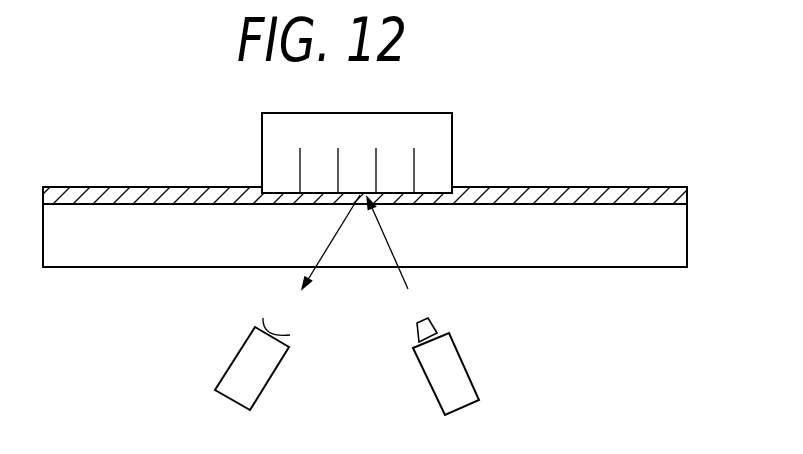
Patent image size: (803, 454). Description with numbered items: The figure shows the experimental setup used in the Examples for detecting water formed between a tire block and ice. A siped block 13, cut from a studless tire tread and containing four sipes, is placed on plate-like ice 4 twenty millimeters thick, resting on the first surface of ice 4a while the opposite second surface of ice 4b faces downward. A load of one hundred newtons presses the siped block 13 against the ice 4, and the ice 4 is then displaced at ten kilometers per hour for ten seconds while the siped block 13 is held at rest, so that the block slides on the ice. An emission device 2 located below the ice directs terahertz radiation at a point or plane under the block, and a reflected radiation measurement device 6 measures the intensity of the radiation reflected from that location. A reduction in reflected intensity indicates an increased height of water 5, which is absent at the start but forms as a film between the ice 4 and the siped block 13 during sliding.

The emission device 2 is at (458, 372).
The ice 4 is at (680, 237).
The first surface of ice 4a is at (65, 200).
The second surface of ice 4b is at (63, 267).
The water 5 is at (682, 198).
The reflected radiation measurement device 6 is at (257, 373).
The siped block 13 is at (438, 143).